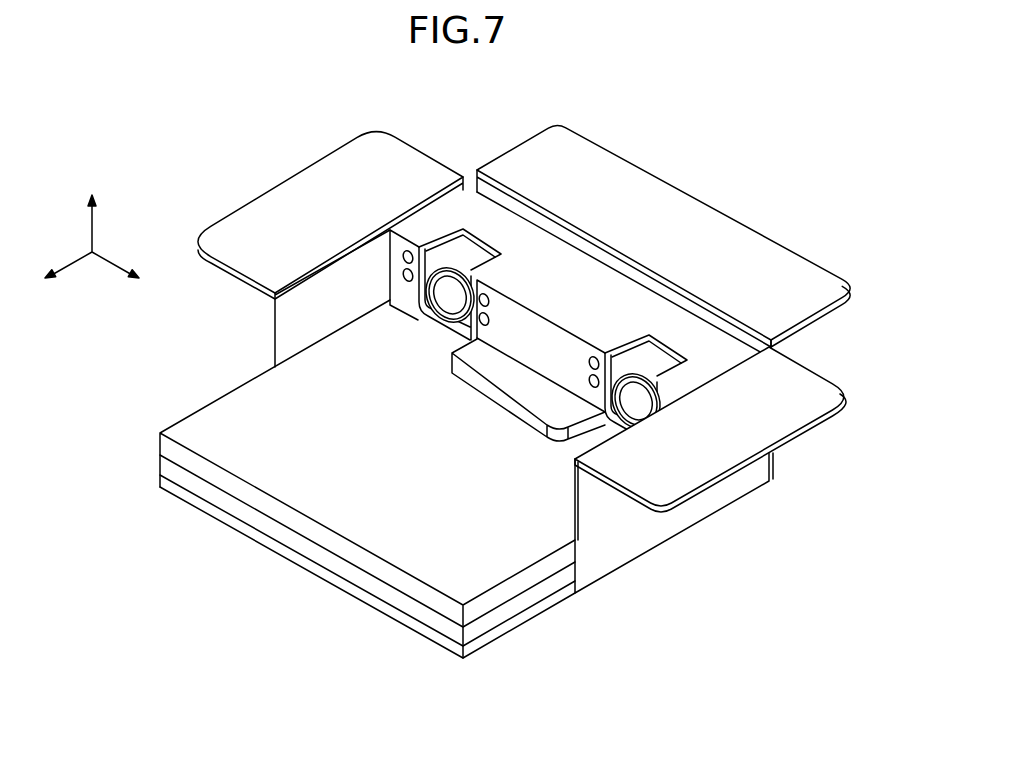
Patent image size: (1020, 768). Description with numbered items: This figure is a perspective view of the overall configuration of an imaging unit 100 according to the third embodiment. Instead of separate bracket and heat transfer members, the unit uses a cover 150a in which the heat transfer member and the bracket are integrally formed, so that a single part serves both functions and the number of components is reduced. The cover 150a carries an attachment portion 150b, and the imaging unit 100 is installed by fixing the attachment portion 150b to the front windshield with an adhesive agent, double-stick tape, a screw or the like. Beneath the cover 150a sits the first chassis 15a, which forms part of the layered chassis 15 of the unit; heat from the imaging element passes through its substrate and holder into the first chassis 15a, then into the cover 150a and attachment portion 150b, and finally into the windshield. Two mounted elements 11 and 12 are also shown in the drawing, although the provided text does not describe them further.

The imaging unit 100 is at (212, 153).
The first light emitting element 11 is at (443, 297).
The second light emitting element 12 is at (634, 404).
The substrate 15 is at (330, 479).
The first chassis 15a is at (197, 462).
The cover 150a is at (620, 550).
The attachment portion 150b is at (407, 160).